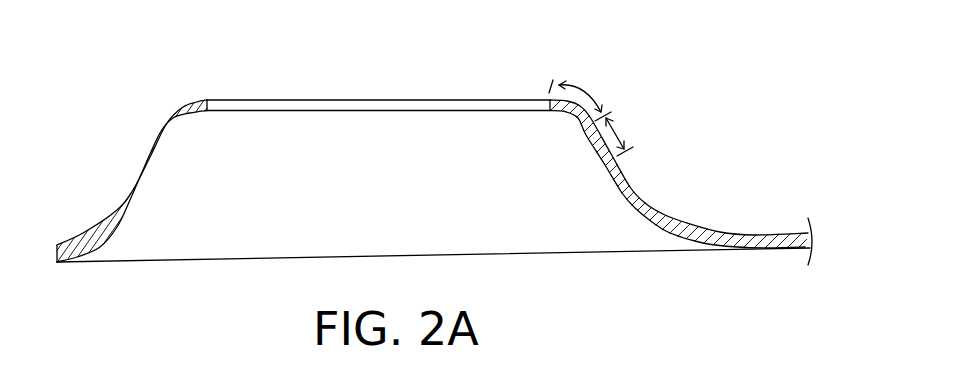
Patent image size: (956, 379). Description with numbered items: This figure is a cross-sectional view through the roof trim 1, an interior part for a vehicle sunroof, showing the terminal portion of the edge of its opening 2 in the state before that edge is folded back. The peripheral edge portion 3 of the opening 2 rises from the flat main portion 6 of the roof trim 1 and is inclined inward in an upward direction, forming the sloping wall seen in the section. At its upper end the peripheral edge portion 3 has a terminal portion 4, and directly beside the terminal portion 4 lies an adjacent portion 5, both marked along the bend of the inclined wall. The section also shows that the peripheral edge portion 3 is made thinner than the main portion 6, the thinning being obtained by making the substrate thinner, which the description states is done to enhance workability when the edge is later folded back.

The roof trim 1 is at (434, 156).
The opening 2 is at (450, 103).
The peripheral edge portion 3 is at (593, 158).
The terminal portion 4 is at (590, 97).
The adjacent portion 5 is at (617, 133).
The main portion 6 is at (745, 211).